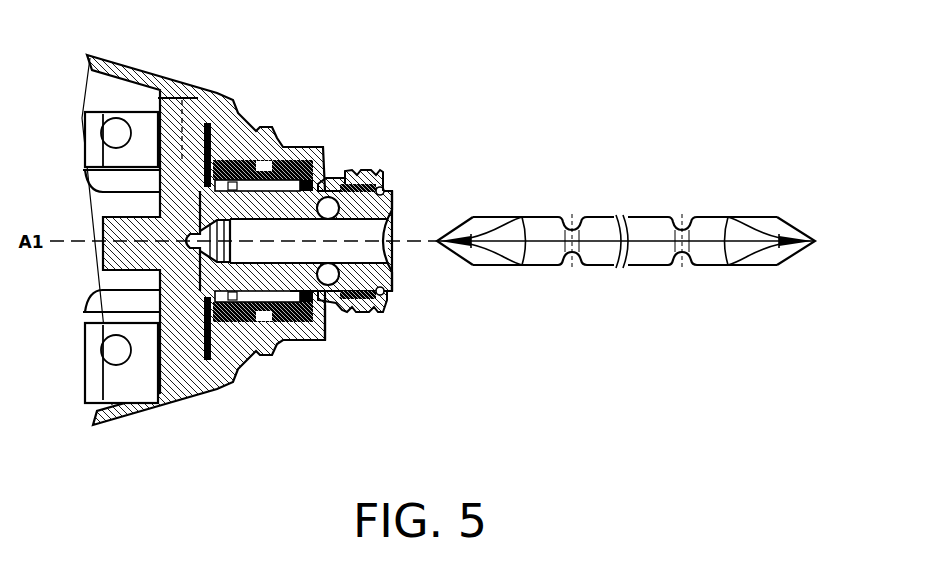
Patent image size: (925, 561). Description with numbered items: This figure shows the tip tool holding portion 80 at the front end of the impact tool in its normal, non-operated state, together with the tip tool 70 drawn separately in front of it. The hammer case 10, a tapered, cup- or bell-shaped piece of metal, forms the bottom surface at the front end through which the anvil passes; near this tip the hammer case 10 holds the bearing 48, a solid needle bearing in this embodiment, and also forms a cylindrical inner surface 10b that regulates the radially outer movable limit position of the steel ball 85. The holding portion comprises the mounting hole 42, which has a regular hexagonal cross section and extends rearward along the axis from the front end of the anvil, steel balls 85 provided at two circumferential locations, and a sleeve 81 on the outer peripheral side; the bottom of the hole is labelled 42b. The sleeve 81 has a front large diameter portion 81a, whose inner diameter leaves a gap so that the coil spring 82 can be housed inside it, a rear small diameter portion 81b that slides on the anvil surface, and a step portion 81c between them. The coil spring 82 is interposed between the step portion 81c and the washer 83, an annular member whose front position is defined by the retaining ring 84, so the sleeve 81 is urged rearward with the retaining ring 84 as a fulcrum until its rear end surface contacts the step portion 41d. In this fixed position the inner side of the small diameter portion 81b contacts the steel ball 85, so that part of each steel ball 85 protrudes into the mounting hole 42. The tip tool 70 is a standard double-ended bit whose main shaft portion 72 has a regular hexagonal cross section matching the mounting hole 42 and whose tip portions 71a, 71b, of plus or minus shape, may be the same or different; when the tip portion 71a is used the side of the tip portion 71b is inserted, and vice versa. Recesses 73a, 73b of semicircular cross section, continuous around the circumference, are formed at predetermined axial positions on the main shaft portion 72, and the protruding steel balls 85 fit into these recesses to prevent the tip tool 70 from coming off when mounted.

The hammer case 10 is at (158, 76).
The cylindrical inner surface 10b is at (325, 305).
The step portion 41d is at (306, 290).
The mounting hole 42 is at (250, 260).
The bit holder bottom 42b is at (213, 244).
The bearing 48 is at (238, 160).
The tip tool 70 is at (642, 207).
The tip portion 71a is at (798, 261).
The tip portion 71b is at (452, 223).
The main shaft portion 72 is at (542, 263).
The recess 73a is at (674, 227).
The recess 73b is at (568, 228).
The tip tool holding portion 80 is at (379, 214).
The sleeve 81 is at (358, 124).
The large diameter portion 81a is at (362, 178).
The small diameter portion 81b is at (322, 187).
The step portion 81c is at (334, 188).
The coil spring 82 is at (366, 300).
The washer 83 is at (384, 188).
The retaining ring 84 is at (385, 194).
The steel ball 85 is at (318, 208).